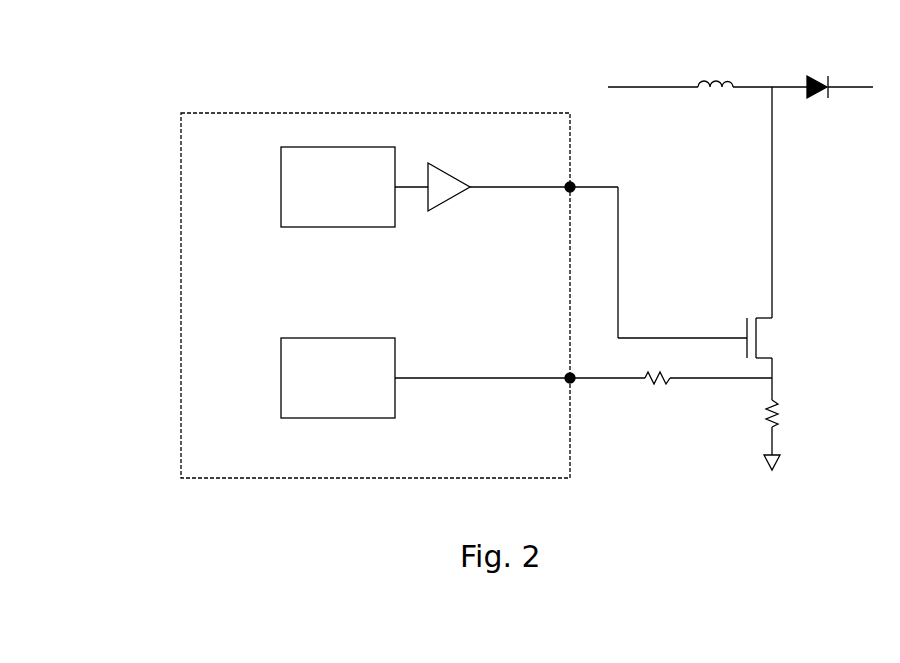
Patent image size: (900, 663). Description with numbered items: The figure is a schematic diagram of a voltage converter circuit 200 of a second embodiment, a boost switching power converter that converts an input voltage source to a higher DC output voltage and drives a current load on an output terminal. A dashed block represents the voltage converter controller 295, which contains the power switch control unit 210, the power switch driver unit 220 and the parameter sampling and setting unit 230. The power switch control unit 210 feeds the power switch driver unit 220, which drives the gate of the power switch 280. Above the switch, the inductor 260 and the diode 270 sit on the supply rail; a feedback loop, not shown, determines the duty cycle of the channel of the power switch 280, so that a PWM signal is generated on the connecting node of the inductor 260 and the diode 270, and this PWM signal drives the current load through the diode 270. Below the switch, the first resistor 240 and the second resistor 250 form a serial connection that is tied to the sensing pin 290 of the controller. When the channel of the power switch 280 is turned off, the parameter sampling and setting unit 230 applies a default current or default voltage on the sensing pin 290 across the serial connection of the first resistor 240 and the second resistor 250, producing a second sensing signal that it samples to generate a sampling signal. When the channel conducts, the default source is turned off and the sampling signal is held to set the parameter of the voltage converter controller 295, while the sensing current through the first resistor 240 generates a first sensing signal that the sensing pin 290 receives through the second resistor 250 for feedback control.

The voltage converter circuit 200 is at (135, 50).
The power switch control unit 210 is at (352, 219).
The power switch driver unit 220 is at (448, 170).
The parameter sampling and setting unit 230 is at (352, 410).
The first resistor 240 is at (778, 416).
The second resistor 250 is at (660, 383).
The inductor 260 is at (712, 82).
The diode 270 is at (820, 78).
The power switch 280 is at (776, 338).
The sensing pin 290 is at (573, 383).
The voltage converter controller 295 is at (218, 137).